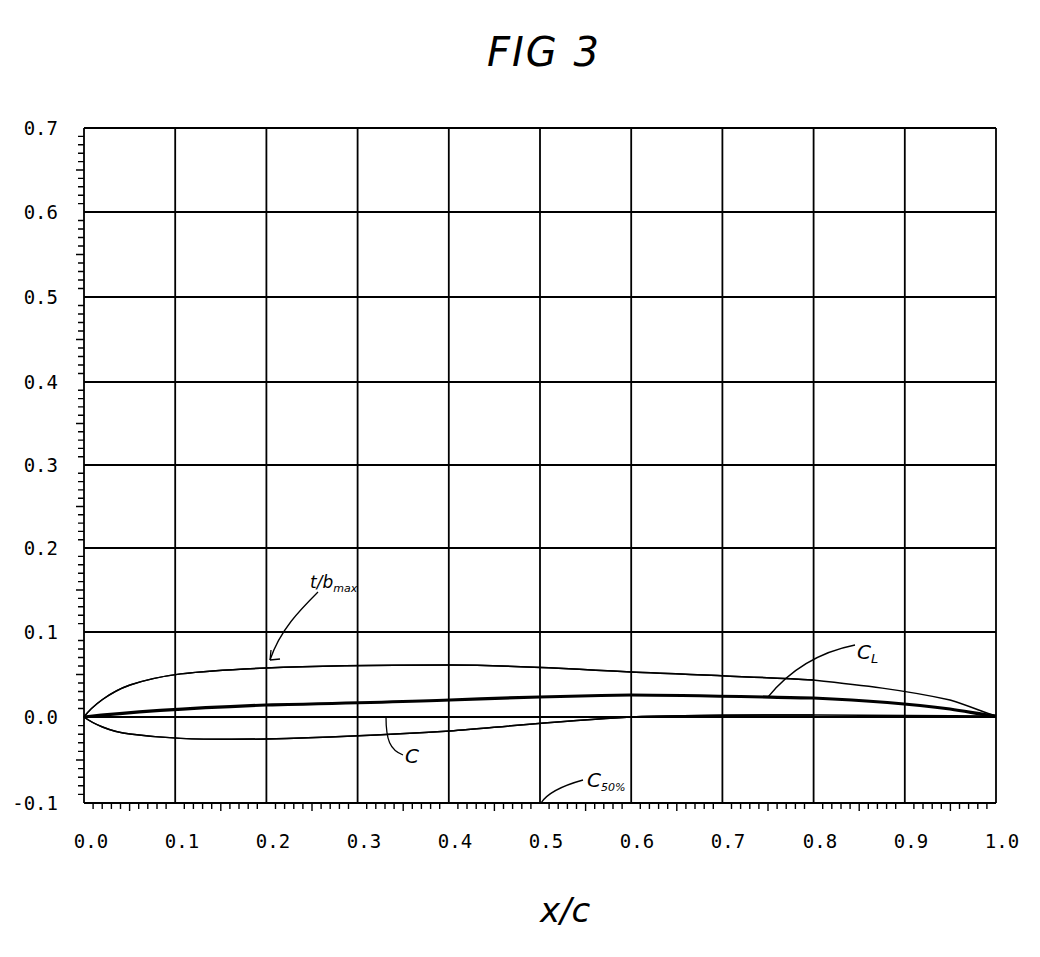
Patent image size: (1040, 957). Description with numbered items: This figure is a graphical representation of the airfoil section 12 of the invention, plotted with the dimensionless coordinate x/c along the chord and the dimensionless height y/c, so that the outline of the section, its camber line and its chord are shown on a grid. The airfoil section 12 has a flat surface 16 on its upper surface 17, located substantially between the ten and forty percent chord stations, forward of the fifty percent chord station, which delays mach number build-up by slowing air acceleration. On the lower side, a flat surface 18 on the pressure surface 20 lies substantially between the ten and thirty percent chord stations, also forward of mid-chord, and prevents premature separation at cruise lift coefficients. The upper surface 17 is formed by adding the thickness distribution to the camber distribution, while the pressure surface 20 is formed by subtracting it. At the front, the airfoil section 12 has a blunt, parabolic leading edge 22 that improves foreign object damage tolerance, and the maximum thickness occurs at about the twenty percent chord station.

The airfoil section 12 is at (680, 657).
The flat surface 16 is at (335, 667).
The upper surface 17 is at (562, 667).
The flat surface 18 is at (293, 740).
The pressure surface 20 is at (563, 724).
The leading edge 22 is at (98, 728).